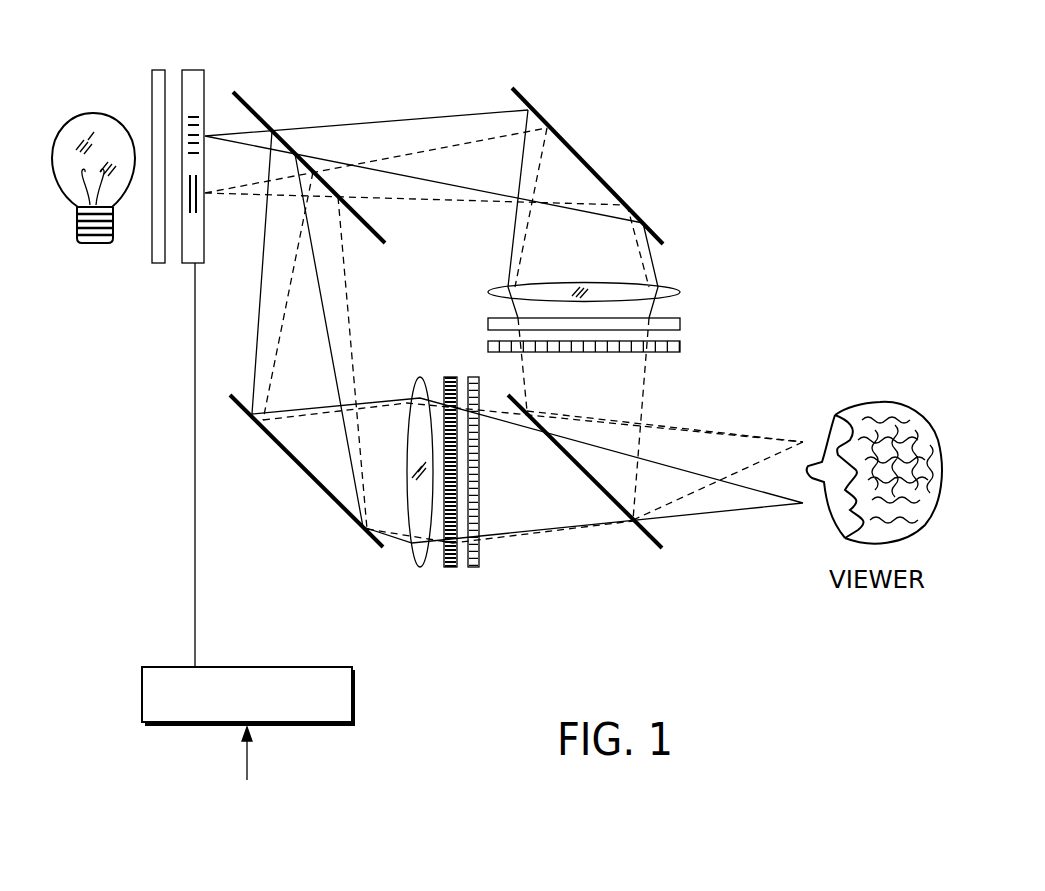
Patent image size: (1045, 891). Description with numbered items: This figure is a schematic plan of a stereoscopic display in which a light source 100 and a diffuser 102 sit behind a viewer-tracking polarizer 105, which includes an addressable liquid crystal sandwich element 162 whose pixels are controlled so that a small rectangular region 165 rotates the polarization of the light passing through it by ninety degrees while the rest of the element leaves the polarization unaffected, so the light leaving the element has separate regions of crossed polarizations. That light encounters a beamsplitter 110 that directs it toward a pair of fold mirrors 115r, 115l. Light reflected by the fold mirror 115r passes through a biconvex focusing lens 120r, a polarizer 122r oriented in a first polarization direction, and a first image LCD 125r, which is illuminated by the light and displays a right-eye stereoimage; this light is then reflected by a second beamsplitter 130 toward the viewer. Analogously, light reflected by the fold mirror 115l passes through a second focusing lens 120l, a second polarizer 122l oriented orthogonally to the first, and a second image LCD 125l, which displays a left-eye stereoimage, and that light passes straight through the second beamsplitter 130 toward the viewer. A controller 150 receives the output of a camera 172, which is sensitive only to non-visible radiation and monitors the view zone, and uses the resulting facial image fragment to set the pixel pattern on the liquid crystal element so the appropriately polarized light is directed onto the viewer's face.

The light source 100 is at (92, 246).
The diffuser 102 is at (157, 265).
The viewer-tracking polarizer 105 is at (188, 274).
The beamsplitter 110 is at (241, 92).
The fold mirror 115r is at (520, 92).
The fold mirror 115l is at (317, 486).
The focusing lens 120r is at (680, 292).
The second focusing lens 120l is at (417, 568).
The polarizer 122r is at (680, 324).
The second polarizer 122l is at (450, 568).
The first image LCD 125r is at (680, 347).
The second image LCD 125l is at (473, 568).
The second beamsplitter 130 is at (653, 546).
The controller 150 is at (352, 697).
The addressable liquid crystal sandwich element 162 is at (193, 70).
The rectangular region 165 is at (193, 228).
The camera 172 is at (247, 801).